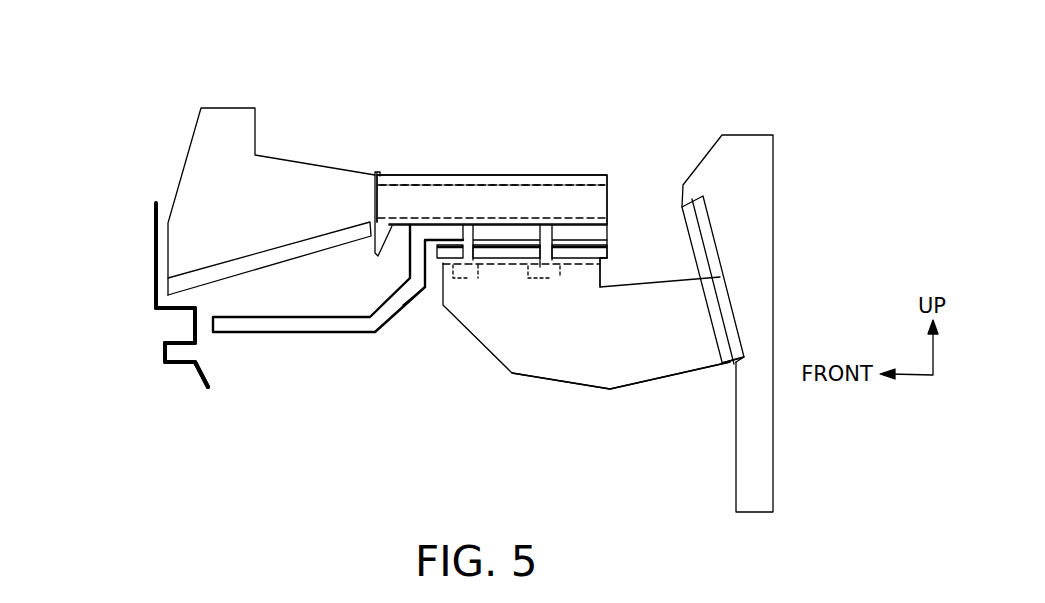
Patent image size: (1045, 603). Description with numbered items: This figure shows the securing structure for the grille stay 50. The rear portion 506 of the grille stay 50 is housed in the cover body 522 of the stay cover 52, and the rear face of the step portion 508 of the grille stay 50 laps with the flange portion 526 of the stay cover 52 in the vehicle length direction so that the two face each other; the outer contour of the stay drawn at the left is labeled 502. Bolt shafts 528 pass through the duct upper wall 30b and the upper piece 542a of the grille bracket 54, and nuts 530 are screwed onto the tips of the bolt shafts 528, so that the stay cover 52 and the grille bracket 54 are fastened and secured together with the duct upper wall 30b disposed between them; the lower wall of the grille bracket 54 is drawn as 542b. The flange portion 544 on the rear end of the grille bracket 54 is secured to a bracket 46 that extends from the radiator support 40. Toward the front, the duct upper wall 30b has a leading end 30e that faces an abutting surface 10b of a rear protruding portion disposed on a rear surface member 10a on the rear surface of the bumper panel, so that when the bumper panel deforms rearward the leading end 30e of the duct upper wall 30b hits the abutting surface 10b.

The grille stay 50 is at (282, 128).
The stay cover 52 is at (460, 146).
The roof side rail outer panel 502 is at (217, 133).
The step portion 508 is at (375, 172).
The flange portion 526 is at (382, 173).
The cover body 522 is at (467, 173).
The rear portion 506 is at (565, 185).
The upper piece 542a is at (608, 252).
The lower wall of reinforcement 542b is at (522, 368).
The bracket 46 is at (720, 277).
The radiator support 40 is at (780, 428).
The rear surface member 10a is at (156, 278).
The abutting surface 10b is at (197, 338).
The leading end 30e is at (195, 327).
The duct upper wall 30b is at (367, 335).
The nuts 530 is at (453, 265).
The bolt shafts 528 is at (533, 262).
The flange portion 544 is at (715, 337).
The grille bracket 54 is at (601, 408).